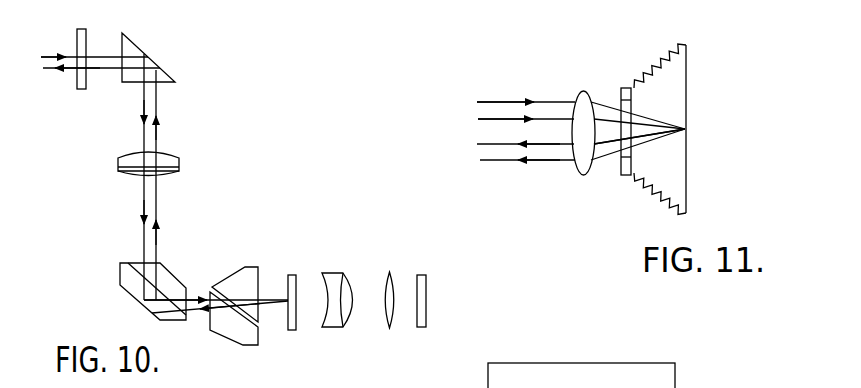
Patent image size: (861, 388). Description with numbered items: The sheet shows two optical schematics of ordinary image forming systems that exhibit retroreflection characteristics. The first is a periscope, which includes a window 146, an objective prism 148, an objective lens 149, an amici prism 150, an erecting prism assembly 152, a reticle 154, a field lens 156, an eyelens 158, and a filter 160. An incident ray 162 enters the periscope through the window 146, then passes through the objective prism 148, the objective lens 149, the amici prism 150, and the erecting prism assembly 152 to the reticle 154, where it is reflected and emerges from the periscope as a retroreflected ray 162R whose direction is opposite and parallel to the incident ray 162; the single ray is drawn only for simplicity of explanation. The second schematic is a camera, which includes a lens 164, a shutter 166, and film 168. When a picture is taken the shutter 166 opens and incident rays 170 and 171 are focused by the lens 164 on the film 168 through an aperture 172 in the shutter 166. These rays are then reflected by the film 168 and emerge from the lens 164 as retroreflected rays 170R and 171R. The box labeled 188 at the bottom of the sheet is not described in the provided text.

In FIG. 10, the window 146 is at (84, 43).
In FIG. 10, the objective prism 148 is at (147, 58).
In FIG. 10, the objective lens 149 is at (165, 155).
In FIG. 10, the amici prism 150 is at (120, 263).
In FIG. 10, the erecting prism assembly 152 is at (218, 266).
In FIG. 10, the reticle 154 is at (287, 274).
In FIG. 10, the field lens 156 is at (333, 280).
In FIG. 10, the eyelens 158 is at (390, 272).
In FIG. 10, the filter 160 is at (425, 285).
In FIG. 10, the incident ray 162 is at (45, 55).
In FIG. 10, the retroreflected ray 162R is at (43, 69).
In FIG. 11, the lens 164 is at (590, 92).
In FIG. 11, the shutter 166 is at (627, 87).
In FIG. 11, the film 168 is at (687, 88).
In FIG. 11, the incident ray 170 is at (543, 102).
In FIG. 11, the retroreflected ray 170R is at (540, 160).
In FIG. 11, the incident ray 171 is at (482, 119).
In FIG. 11, the retroreflected ray 171R is at (483, 144).
In FIG. 11, the aperture 172 is at (620, 152).
In FIG. 10, the scanning and reading electronics 188 is at (678, 386).